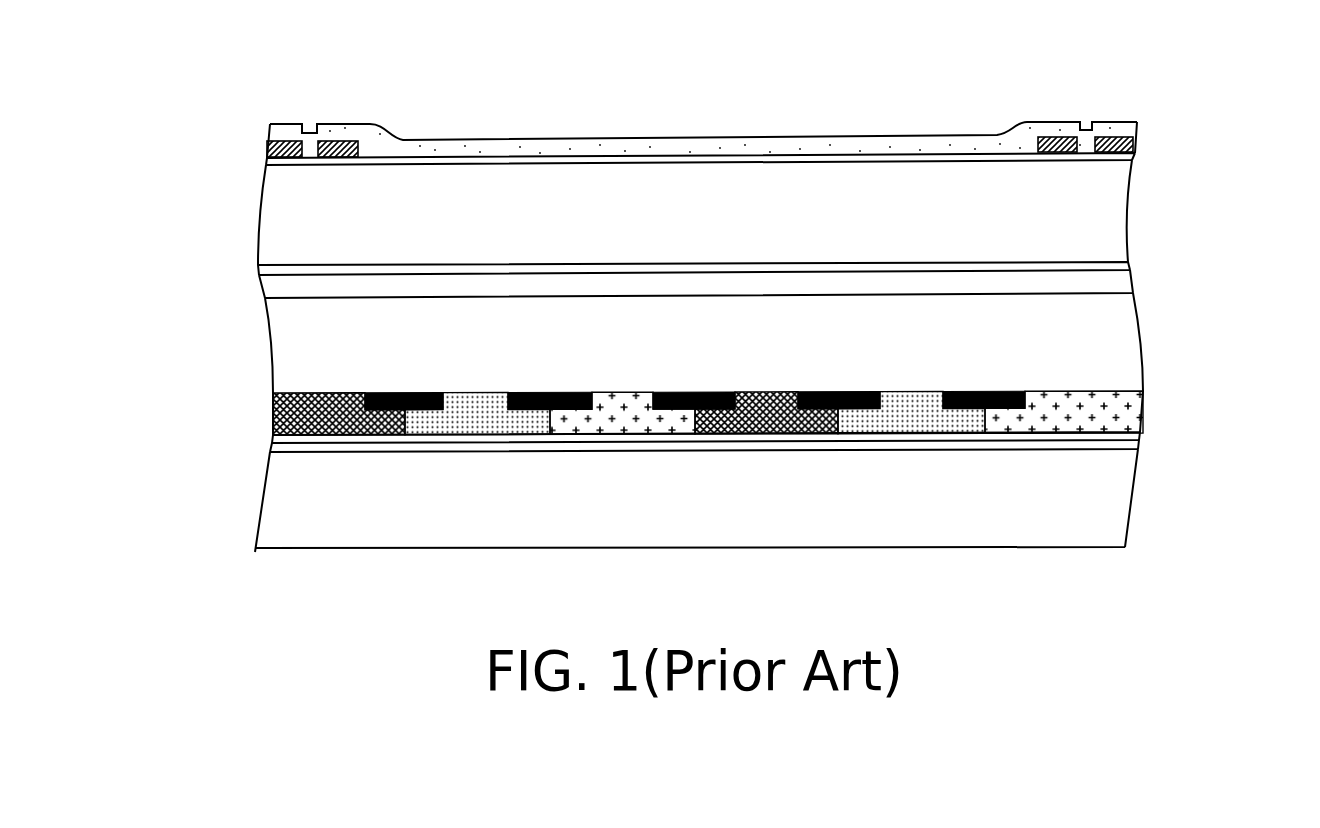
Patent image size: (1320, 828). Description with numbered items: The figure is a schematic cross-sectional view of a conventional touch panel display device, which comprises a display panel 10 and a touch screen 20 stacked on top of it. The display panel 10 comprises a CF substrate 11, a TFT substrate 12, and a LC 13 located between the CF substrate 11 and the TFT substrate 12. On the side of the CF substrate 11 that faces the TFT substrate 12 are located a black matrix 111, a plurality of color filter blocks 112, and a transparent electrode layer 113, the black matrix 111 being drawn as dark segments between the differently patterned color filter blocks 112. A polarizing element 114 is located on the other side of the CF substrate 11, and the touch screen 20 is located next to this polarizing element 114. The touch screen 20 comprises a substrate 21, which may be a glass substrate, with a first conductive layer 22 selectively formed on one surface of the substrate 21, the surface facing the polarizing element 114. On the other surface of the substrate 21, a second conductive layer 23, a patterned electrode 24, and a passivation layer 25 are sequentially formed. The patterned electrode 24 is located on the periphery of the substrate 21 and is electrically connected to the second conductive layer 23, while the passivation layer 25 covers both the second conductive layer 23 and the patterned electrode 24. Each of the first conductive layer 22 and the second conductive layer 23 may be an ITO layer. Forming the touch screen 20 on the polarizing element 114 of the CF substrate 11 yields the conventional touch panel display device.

The display panel 10 is at (778, 410).
The CF substrate 11 is at (1118, 348).
The black matrix 111 is at (1012, 391).
The color filter blocks 112 is at (1130, 408).
The transparent electrode layer 113 is at (1137, 435).
The polarizing element 114 is at (1118, 282).
The TFT substrate 12 is at (738, 500).
The LC 13 is at (1137, 445).
The touch screen 20 is at (779, 172).
The substrate 21 is at (1113, 218).
The first conductive layer 22 is at (737, 253).
The second conductive layer 23 is at (1130, 157).
The patterned electrode 24 is at (1132, 147).
The passivation layer 25 is at (1113, 128).